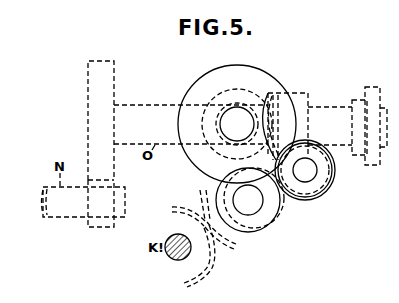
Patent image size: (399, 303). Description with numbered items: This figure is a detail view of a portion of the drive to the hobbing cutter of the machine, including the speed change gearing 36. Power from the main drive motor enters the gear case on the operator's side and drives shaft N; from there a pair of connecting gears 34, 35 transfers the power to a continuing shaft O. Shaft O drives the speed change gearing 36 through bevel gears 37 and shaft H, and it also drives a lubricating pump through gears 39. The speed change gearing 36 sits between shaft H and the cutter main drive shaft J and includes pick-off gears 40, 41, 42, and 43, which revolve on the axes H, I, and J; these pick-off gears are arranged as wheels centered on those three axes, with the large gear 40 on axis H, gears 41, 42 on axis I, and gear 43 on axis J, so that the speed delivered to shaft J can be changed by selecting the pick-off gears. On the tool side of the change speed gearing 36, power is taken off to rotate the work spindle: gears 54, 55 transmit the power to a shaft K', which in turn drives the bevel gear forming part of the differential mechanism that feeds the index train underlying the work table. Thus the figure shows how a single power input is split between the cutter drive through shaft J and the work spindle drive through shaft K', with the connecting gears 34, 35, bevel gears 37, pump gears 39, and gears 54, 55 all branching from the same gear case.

The connecting gear 34 is at (103, 228).
The connecting gear 35 is at (118, 60).
The speed change gearing 36 is at (184, 186).
The bevel gears 37 is at (265, 101).
The gears 39 is at (369, 89).
The pick-off gear 40 is at (192, 92).
The pick-off gear 41 is at (324, 180).
The pick-off gear 42 is at (320, 193).
The pick-off gear 43 is at (277, 213).
The gear 54 is at (236, 244).
The gear 55 is at (208, 268).